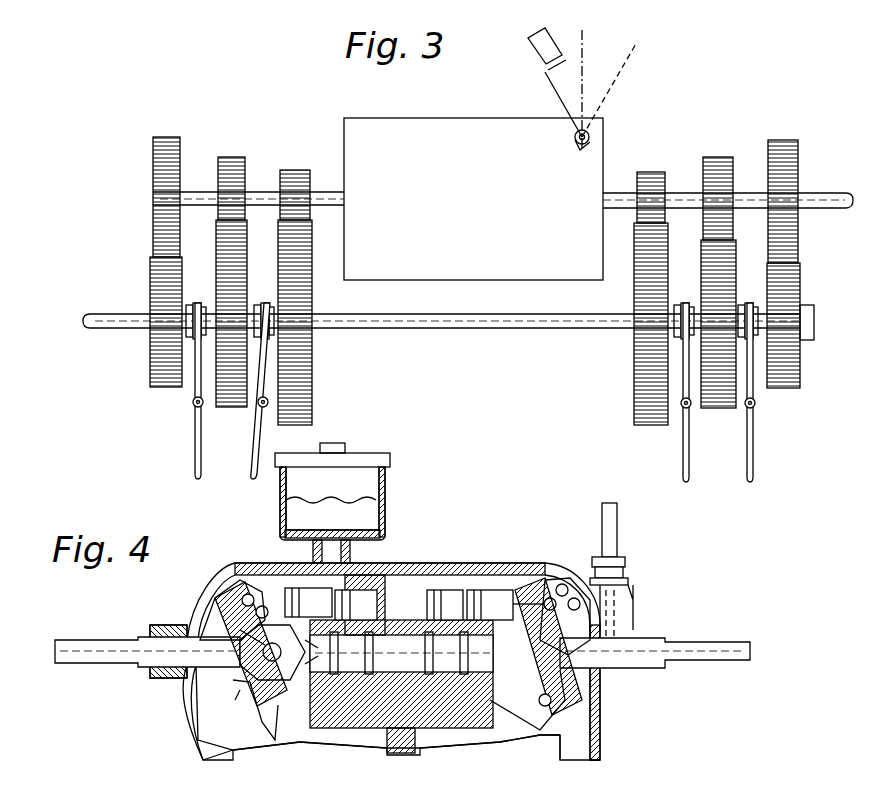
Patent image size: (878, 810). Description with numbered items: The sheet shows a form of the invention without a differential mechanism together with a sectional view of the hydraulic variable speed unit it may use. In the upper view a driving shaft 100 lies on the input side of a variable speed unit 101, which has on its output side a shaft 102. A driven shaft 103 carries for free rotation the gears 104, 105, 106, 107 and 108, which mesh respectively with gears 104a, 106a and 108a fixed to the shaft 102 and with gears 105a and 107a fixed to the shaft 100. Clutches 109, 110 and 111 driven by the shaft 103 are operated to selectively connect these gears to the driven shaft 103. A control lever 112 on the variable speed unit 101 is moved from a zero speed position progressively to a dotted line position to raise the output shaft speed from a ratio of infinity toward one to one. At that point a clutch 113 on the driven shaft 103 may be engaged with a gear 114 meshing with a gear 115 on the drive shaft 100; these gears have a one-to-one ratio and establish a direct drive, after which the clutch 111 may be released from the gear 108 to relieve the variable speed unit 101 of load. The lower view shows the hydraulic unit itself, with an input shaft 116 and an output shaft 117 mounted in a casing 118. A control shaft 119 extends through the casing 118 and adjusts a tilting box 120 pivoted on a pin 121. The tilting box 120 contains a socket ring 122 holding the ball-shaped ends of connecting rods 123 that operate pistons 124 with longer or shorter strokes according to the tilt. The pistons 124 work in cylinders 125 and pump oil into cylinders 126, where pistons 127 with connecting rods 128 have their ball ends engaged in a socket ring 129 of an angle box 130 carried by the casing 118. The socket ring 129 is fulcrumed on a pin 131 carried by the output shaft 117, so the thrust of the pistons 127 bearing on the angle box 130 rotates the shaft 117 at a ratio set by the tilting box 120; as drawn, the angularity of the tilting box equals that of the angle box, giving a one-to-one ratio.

In FIG. 3, the driving shaft 100 is at (820, 210).
In FIG. 3, the variable speed unit 101 is at (398, 130).
In FIG. 3, the shaft 102 is at (330, 192).
In FIG. 3, the driven shaft 103 is at (484, 330).
In FIG. 3, the gear 104 is at (312, 392).
In FIG. 3, the gear 104a is at (290, 170).
In FIG. 3, the gear 105 is at (634, 393).
In FIG. 3, the gear 105a is at (650, 172).
In FIG. 3, the gear 106 is at (238, 407).
In FIG. 3, the gear 106a is at (231, 157).
In FIG. 3, the gear 107 is at (718, 408).
In FIG. 3, the gear 107a is at (716, 157).
In FIG. 3, the gear 108 is at (165, 387).
In FIG. 3, the gear 108a is at (163, 137).
In FIG. 3, the clutch 109 is at (265, 303).
In FIG. 3, the clutch 110 is at (684, 303).
In FIG. 3, the clutch 111 is at (195, 303).
In FIG. 3, the control lever 112 is at (549, 84).
In FIG. 3, the clutch 113 is at (748, 303).
In FIG. 3, the gear 114 is at (792, 388).
In FIG. 3, the gear 115 is at (797, 142).
In FIG. 4, the input shaft 116 is at (700, 642).
In FIG. 4, the output shaft 117 is at (75, 640).
In FIG. 4, the casing 118 is at (460, 563).
In FIG. 4, the control shaft 119 is at (617, 526).
In FIG. 4, the tilting box 120 is at (560, 576).
In FIG. 4, the pin 121 is at (605, 716).
In FIG. 4, the socket ring 122 is at (540, 596).
In FIG. 4, the connecting rods 123 is at (528, 595).
In FIG. 4, the pistons 124 is at (488, 590).
In FIG. 4, the cylinders 125 is at (440, 590).
In FIG. 4, the cylinders 126 is at (370, 590).
In FIG. 4, the pistons 127 is at (296, 588).
In FIG. 4, the connecting rods 128 is at (255, 590).
In FIG. 4, the socket ring 129 is at (232, 592).
In FIG. 4, the angle box 130 is at (205, 594).
In FIG. 4, the pin 131 is at (268, 657).